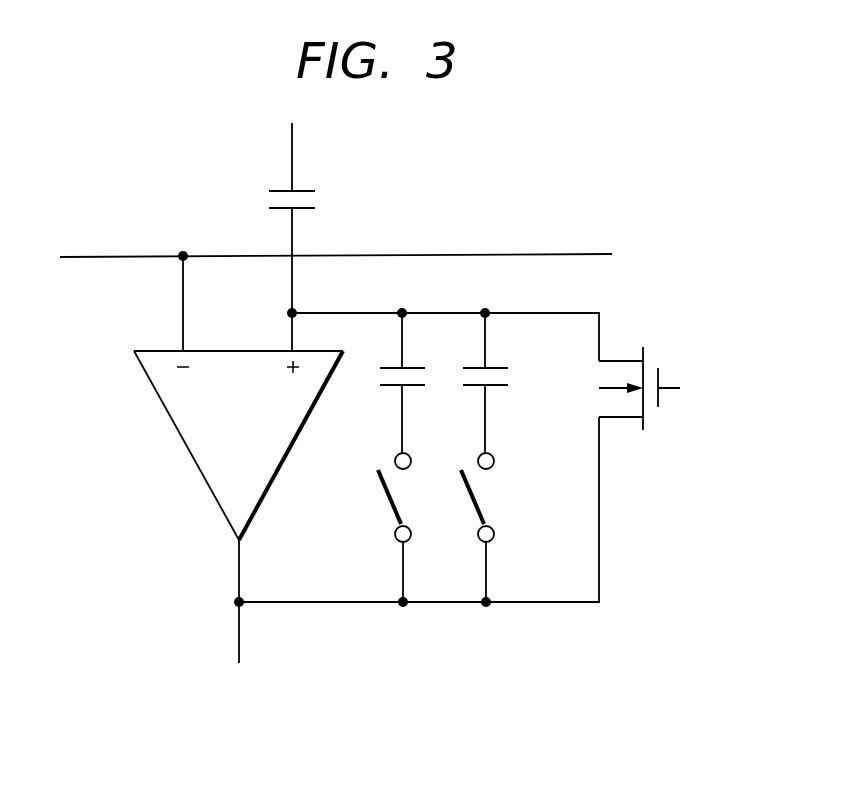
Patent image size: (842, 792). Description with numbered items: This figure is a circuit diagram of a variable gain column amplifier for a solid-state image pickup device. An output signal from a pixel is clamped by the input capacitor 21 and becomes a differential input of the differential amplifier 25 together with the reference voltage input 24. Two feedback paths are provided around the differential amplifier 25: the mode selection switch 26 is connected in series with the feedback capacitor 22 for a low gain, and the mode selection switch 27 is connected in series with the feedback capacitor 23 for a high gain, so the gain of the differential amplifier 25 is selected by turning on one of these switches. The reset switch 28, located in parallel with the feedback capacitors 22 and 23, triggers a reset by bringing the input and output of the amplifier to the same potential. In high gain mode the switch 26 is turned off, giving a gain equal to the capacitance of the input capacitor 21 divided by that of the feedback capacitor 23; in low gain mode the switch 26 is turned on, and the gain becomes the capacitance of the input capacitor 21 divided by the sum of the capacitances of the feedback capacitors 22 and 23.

The input capacitor 21 is at (303, 191).
The feedback capacitor 22 is at (393, 387).
The feedback capacitor 23 is at (495, 387).
The reference voltage input 24 is at (117, 256).
The differential amplifier 25 is at (184, 441).
The mode selection switch 26 is at (388, 499).
The mode selection switch 27 is at (478, 500).
The reset switch 28 is at (660, 400).